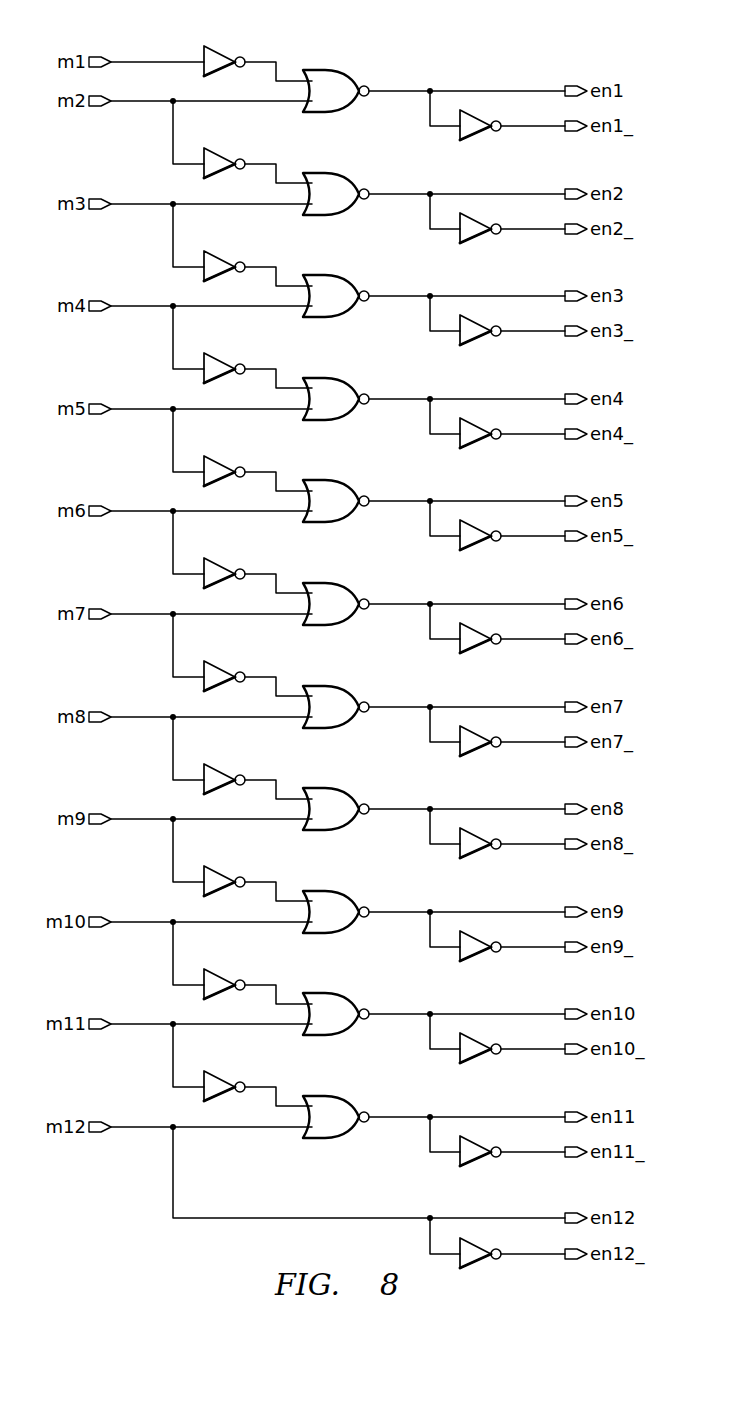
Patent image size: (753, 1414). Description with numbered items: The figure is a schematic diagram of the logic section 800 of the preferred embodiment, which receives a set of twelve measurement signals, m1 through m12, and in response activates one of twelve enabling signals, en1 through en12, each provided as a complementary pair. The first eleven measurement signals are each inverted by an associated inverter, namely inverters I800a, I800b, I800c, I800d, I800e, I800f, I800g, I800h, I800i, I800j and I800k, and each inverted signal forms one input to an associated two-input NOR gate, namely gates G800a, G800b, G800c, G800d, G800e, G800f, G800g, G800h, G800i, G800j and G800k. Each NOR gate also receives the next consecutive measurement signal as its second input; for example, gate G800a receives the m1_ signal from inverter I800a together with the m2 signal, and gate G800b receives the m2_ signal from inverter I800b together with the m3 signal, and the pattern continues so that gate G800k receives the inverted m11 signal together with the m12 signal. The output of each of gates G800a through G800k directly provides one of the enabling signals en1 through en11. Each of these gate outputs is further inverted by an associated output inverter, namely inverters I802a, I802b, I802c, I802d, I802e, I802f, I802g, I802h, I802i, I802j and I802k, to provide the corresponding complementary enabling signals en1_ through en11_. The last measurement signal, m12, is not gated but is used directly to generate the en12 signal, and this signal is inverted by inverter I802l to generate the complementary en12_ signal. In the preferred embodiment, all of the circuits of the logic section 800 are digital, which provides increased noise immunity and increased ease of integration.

The logic section 800 is at (503, 51).
The inverter I800a is at (236, 34).
The inverter I800b is at (236, 136).
The inverter I800c is at (236, 239).
The inverter I800d is at (236, 341).
The inverter I800e is at (236, 444).
The inverter I800f is at (236, 546).
The inverter I800g is at (236, 649).
The inverter I800h is at (236, 752).
The inverter I800i is at (236, 854).
The inverter I800j is at (236, 957).
The inverter I800k is at (236, 1059).
The two-input NOR gate G800a is at (342, 112).
The two-input NOR gate G800b is at (342, 215).
The two-input NOR gate G800c is at (342, 317).
The two-input NOR gate G800d is at (342, 420).
The two-input NOR gate G800e is at (342, 522).
The two-input NOR gate G800f is at (342, 625).
The two-input NOR gate G800g is at (342, 728).
The two-input NOR gate G800h is at (342, 830).
The two-input NOR gate G800i is at (342, 933).
The two-input NOR gate G800j is at (342, 1035).
The two-input NOR gate G800k is at (342, 1138).
The output inverter I802a is at (483, 142).
The output inverter I802b is at (483, 245).
The output inverter I802c is at (483, 347).
The output inverter I802d is at (483, 450).
The output inverter I802e is at (483, 552).
The output inverter I802f is at (483, 655).
The output inverter I802g is at (483, 758).
The output inverter I802h is at (483, 860).
The output inverter I802i is at (483, 963).
The output inverter I802j is at (483, 1065).
The output inverter I802k is at (483, 1168).
The inverter I802l is at (483, 1270).